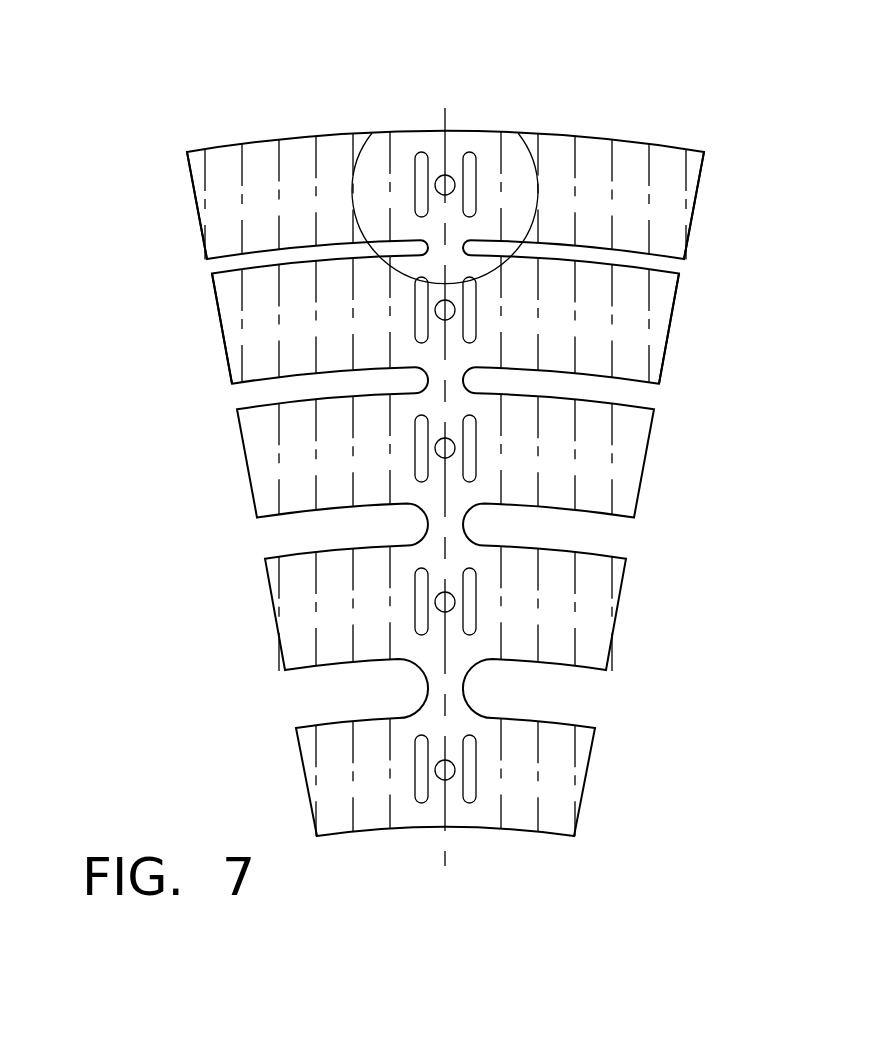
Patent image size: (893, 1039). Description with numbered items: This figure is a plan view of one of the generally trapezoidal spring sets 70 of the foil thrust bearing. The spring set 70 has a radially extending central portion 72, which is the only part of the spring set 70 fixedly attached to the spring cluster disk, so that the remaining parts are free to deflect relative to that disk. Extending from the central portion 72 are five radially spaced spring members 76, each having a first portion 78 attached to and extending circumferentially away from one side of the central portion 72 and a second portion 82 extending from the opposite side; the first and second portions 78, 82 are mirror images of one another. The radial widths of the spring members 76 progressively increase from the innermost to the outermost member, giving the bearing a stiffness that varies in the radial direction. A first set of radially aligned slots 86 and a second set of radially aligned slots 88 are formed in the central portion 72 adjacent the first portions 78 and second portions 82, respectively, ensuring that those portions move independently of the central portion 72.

The spring set 70 is at (603, 136).
The central portion 72 is at (454, 140).
The spring member 76 is at (222, 210).
The first portion 78 is at (292, 146).
The second portion 82 is at (629, 162).
The first set of slots 86 is at (414, 156).
The second set of slots 88 is at (477, 157).